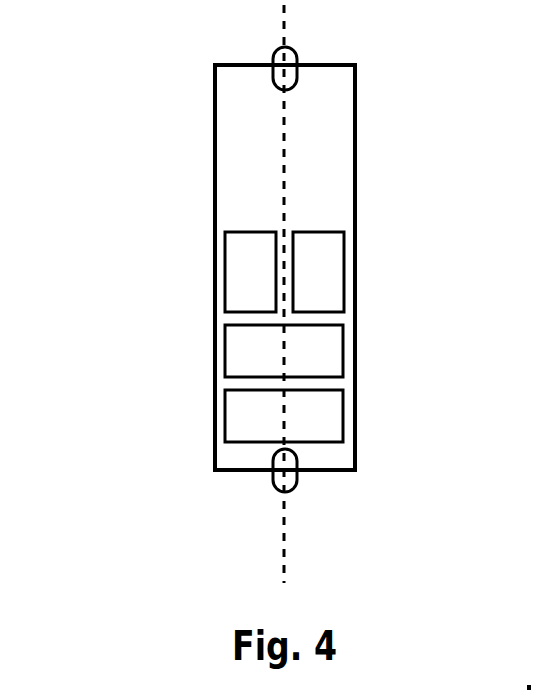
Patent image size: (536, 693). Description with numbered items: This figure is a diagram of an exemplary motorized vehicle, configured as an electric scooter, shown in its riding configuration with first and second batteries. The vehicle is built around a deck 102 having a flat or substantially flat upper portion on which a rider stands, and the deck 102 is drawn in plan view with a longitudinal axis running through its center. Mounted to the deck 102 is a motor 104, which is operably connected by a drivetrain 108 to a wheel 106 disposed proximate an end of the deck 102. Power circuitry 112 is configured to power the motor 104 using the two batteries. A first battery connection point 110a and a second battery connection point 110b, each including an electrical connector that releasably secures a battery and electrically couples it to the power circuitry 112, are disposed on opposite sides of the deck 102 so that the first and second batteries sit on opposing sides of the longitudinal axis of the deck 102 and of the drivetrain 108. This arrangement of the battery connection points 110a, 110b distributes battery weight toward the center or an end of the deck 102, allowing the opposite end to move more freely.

The deck 102 is at (213, 140).
The motor 104 is at (230, 417).
The wheel 106 is at (273, 472).
The drivetrain 108 is at (284, 443).
The battery connection point 110a is at (233, 245).
The battery connection point 110b is at (330, 231).
The power circuitry 112 is at (225, 348).